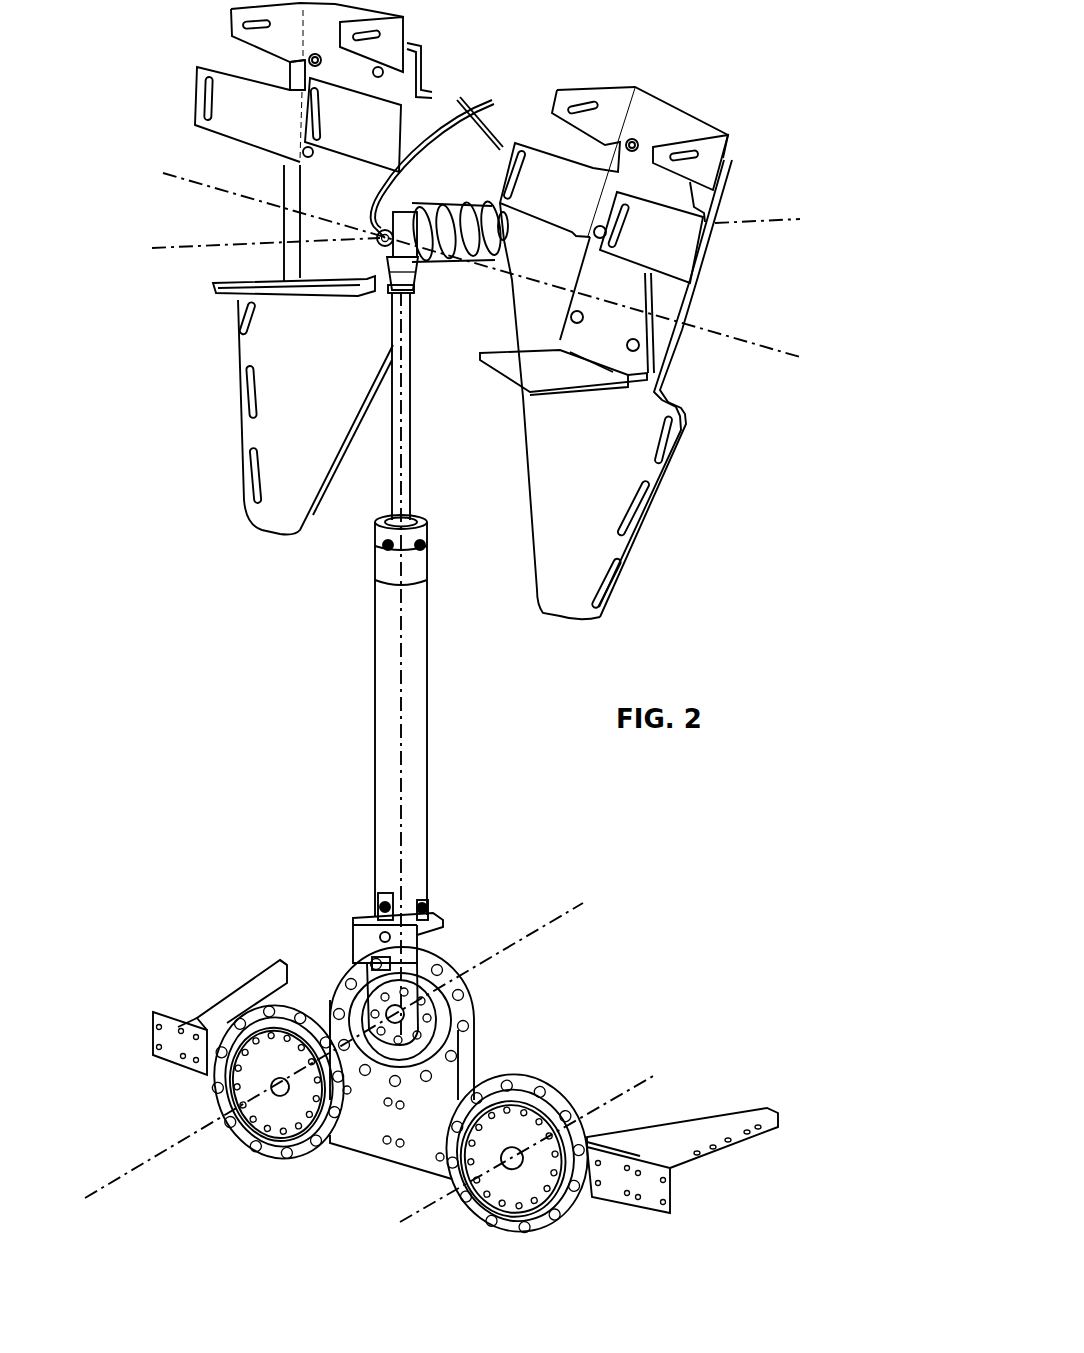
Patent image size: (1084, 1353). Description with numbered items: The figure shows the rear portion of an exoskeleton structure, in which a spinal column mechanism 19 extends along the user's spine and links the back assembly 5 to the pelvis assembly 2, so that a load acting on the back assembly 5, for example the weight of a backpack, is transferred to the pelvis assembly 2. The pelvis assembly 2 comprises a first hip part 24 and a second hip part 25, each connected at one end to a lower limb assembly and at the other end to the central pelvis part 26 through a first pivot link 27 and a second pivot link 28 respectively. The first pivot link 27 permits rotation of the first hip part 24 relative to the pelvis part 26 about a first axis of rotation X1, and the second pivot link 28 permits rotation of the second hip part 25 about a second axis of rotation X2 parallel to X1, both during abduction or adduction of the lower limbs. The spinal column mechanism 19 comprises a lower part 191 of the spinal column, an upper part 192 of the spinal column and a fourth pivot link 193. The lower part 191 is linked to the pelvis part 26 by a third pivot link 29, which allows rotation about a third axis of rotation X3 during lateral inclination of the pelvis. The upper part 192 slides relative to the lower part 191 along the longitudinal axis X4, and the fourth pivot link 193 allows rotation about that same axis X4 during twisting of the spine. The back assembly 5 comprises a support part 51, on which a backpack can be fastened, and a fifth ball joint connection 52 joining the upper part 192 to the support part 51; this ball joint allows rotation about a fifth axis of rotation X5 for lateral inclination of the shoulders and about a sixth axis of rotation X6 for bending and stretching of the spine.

The pelvis assembly 2 is at (378, 1172).
The back assembly 5 is at (520, 80).
The spinal column mechanism 19 is at (350, 697).
The first hip part 24 is at (737, 1148).
The second hip part 25 is at (253, 990).
The pelvis part 26 is at (360, 1135).
The first pivot link 27 is at (553, 1088).
The second pivot link 28 is at (252, 1156).
The third pivot link 29 is at (343, 942).
The support part 51 is at (447, 120).
The fifth ball joint connection 52 is at (470, 135).
The lower part of the spinal column 191 is at (415, 761).
The upper part of the spinal column 192 is at (411, 397).
The fourth pivot link 193 is at (368, 546).
The first axis of rotation X1 is at (634, 1073).
The second axis of rotation X2 is at (94, 1186).
The third axis of rotation X3 is at (570, 905).
The longitudinal axis X4 is at (403, 679).
The fifth axis of rotation X5 is at (170, 246).
The sixth axis of rotation X6 is at (178, 171).